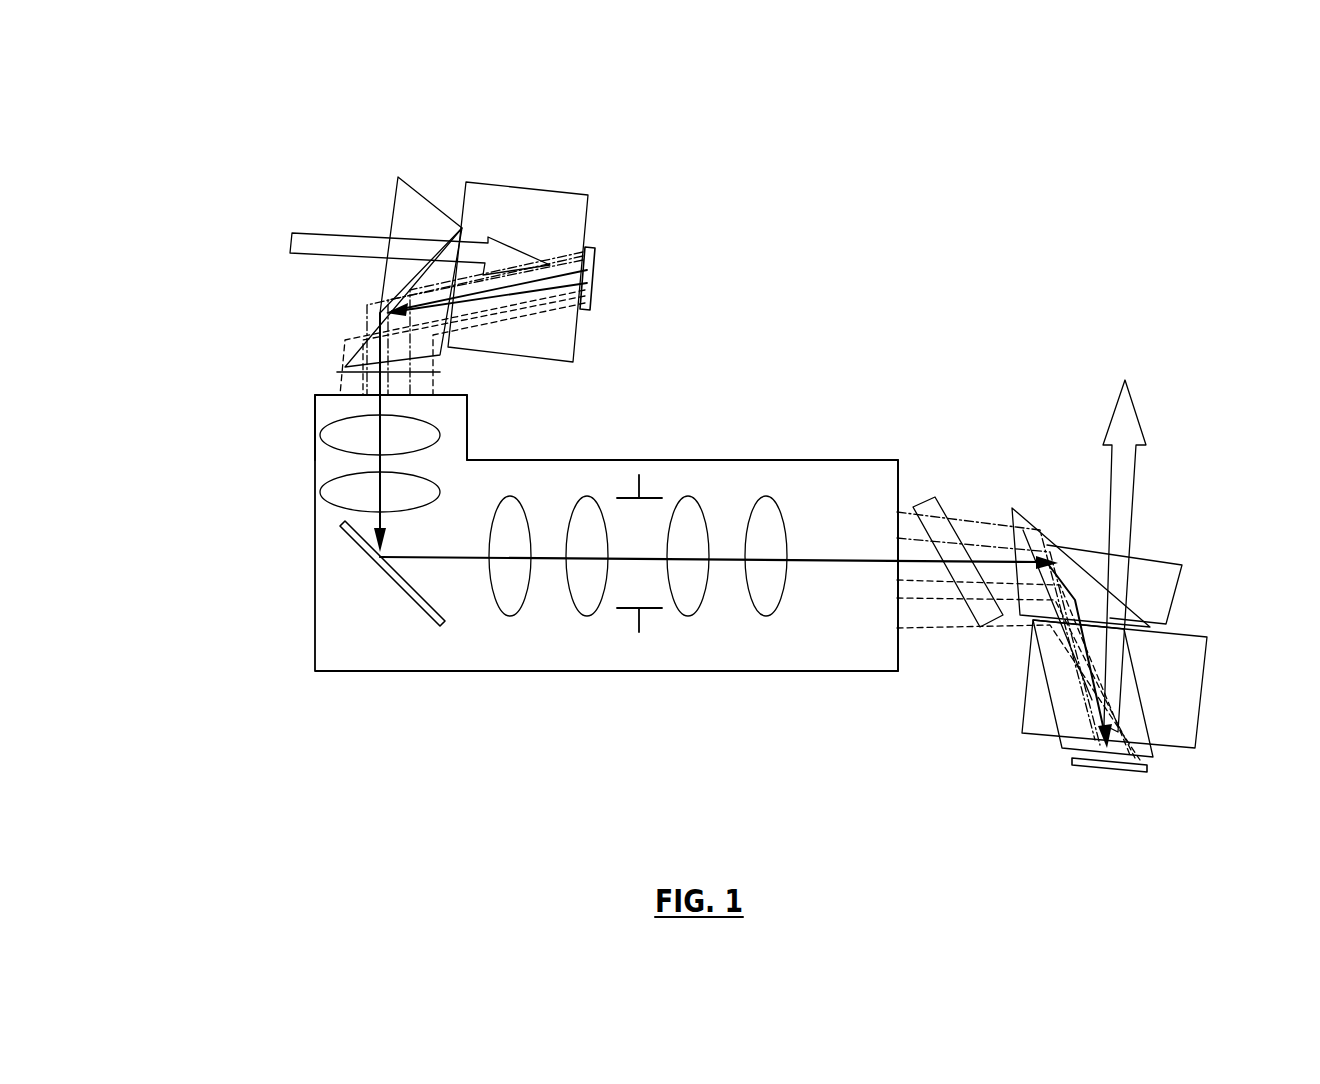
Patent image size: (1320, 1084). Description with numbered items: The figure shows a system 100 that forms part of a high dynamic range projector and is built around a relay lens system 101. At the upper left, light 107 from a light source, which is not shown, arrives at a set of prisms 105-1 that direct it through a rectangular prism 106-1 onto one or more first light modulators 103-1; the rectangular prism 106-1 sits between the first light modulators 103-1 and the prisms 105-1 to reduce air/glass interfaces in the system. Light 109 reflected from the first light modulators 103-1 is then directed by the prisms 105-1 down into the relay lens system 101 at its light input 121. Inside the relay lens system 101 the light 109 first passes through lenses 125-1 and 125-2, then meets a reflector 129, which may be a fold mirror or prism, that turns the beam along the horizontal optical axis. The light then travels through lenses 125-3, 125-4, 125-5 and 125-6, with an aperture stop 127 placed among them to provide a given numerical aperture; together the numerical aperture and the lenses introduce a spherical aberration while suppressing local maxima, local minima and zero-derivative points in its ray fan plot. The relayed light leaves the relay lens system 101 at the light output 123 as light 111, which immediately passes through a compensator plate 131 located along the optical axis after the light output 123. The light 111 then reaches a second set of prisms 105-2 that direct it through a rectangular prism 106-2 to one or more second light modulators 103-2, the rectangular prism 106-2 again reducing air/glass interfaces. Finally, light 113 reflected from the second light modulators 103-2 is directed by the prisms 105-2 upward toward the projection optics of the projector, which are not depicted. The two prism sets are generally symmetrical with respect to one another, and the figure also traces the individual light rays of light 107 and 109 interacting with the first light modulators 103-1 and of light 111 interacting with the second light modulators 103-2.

The system 100 is at (243, 798).
The relay lens system 101 is at (333, 650).
The light input 121 is at (326, 406).
The prisms 105-1 is at (422, 195).
The rectangular prism 106-1 is at (555, 232).
The first light modulators 103-1 is at (597, 278).
The light 107 is at (315, 238).
The light 109 is at (378, 320).
The lens 125-1 is at (333, 436).
The lens 125-2 is at (333, 491).
The reflector 129 is at (348, 545).
The lens 125-3 is at (510, 606).
The lens 125-4 is at (587, 606).
The lens 125-5 is at (688, 606).
The lens 125-6 is at (766, 606).
The aperture stop 127 is at (639, 475).
The light output 123 is at (892, 478).
The compensator plate 131 is at (975, 632).
The light 111 is at (990, 550).
The prisms 105-2 is at (1170, 562).
The rectangular prism 106-2 is at (1200, 674).
The light 113 is at (1140, 408).
The second light modulators 103-2 is at (1095, 765).